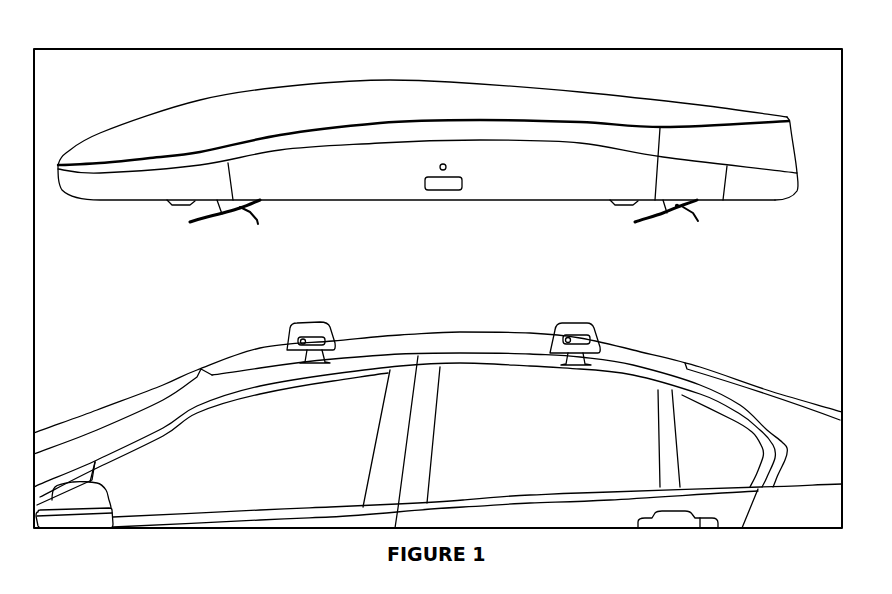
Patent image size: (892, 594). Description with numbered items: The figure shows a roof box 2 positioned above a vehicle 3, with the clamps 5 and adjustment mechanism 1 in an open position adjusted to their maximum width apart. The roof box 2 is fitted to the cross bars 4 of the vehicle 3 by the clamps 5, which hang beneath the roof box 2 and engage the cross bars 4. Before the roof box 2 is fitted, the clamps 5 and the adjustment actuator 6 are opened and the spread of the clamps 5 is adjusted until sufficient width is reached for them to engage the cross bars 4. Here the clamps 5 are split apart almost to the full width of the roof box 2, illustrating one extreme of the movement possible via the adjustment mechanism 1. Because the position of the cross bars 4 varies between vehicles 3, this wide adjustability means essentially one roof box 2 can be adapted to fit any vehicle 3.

The adjustment mechanism 1 is at (173, 223).
The roof box 2 is at (162, 138).
The vehicle 3 is at (103, 432).
The cross bars 4 is at (305, 335).
The clamps 5 is at (202, 227).
The adjustment actuator 6 is at (255, 219).